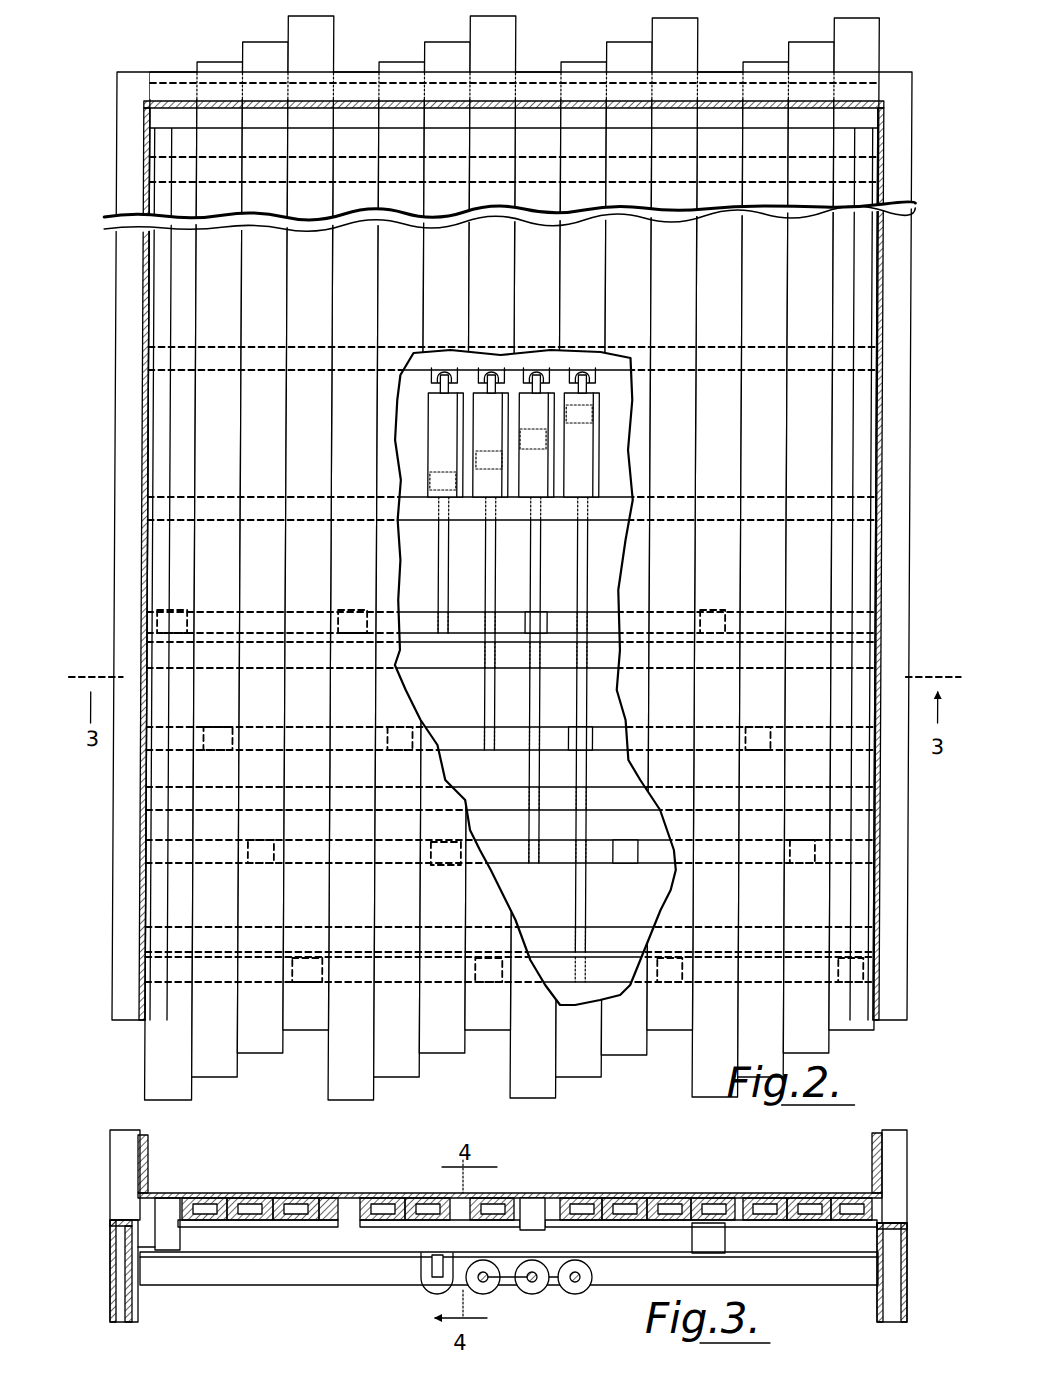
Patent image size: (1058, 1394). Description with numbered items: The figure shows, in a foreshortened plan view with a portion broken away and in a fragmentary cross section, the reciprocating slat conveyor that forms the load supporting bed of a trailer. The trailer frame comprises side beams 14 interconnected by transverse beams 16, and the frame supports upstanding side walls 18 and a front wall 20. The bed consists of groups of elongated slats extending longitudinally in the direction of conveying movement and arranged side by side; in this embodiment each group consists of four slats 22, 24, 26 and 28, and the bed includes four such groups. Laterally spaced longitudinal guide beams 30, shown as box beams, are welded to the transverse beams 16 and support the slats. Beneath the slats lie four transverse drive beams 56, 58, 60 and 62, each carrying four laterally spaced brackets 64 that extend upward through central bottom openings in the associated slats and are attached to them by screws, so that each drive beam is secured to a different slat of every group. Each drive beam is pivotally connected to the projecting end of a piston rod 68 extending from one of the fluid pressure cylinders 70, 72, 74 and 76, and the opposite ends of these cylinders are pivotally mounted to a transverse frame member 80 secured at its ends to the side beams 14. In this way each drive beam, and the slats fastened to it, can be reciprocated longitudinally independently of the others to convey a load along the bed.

In FIG. 2, the side beams 14 is at (913, 177).
In FIG. 3, the side beams 14 is at (110, 1277).
In FIG. 2, the transverse beams 16 is at (672, 160).
In FIG. 3, the transverse beams 16 is at (110, 1233).
In FIG. 2, the side walls 18 is at (122, 227).
In FIG. 2, the front wall 20 is at (868, 102).
In FIG. 2, the slat 22 is at (175, 1104).
In FIG. 3, the slat 22 is at (170, 1198).
In FIG. 2, the slat 24 is at (215, 1081).
In FIG. 3, the slat 24 is at (215, 1198).
In FIG. 2, the slat 26 is at (262, 1057).
In FIG. 3, the slat 26 is at (258, 1198).
In FIG. 2, the slat 28 is at (305, 1034).
In FIG. 3, the slat 28 is at (300, 1198).
In FIG. 3, the guide beams 30 is at (213, 1222).
In FIG. 2, the transverse drive beam 56 is at (428, 607).
In FIG. 3, the transverse drive beam 56 is at (298, 1243).
In FIG. 2, the transverse drive beam 58 is at (458, 733).
In FIG. 2, the transverse drive beam 60 is at (504, 863).
In FIG. 2, the transverse drive beam 62 is at (548, 965).
In FIG. 2, the brackets 64 is at (197, 607).
In FIG. 3, the brackets 64 is at (530, 1208).
In FIG. 2, the piston rods 68 is at (492, 585).
In FIG. 3, the piston rods 68 is at (585, 1276).
In FIG. 2, the fluid pressure cylinder 70 is at (437, 440).
In FIG. 3, the fluid pressure cylinder 70 is at (426, 1292).
In FIG. 2, the fluid pressure cylinder 72 is at (480, 418).
In FIG. 3, the fluid pressure cylinder 72 is at (492, 1294).
In FIG. 2, the fluid pressure cylinder 74 is at (541, 422).
In FIG. 3, the fluid pressure cylinder 74 is at (540, 1292).
In FIG. 2, the fluid pressure cylinder 76 is at (591, 469).
In FIG. 3, the fluid pressure cylinder 76 is at (580, 1292).
In FIG. 3, the transverse frame member 80 is at (337, 1275).